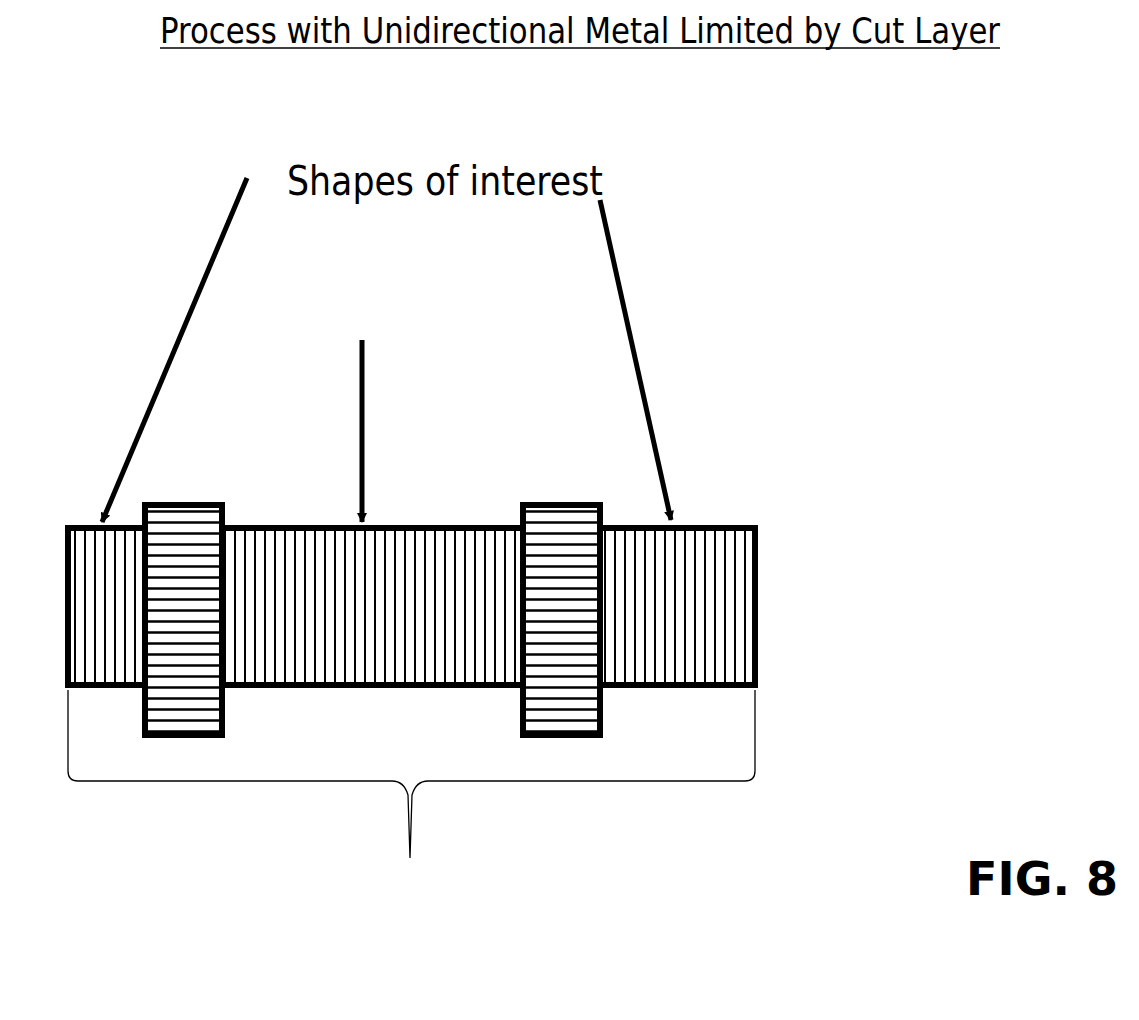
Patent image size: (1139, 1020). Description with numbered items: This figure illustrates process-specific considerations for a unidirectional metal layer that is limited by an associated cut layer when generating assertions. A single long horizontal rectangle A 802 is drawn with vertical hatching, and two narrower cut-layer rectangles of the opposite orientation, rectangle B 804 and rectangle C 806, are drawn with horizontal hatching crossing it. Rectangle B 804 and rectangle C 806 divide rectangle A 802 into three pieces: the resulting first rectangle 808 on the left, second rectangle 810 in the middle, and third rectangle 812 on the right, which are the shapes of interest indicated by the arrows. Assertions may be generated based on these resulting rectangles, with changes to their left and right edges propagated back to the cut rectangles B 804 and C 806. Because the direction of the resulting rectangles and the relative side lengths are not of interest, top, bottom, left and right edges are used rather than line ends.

The rectangle A 802 is at (411, 659).
The rectangle B 804 is at (190, 503).
The rectangle C 806 is at (565, 503).
The rectangle A1 808 is at (110, 690).
The rectangle A2 810 is at (385, 690).
The rectangle A3 812 is at (683, 690).